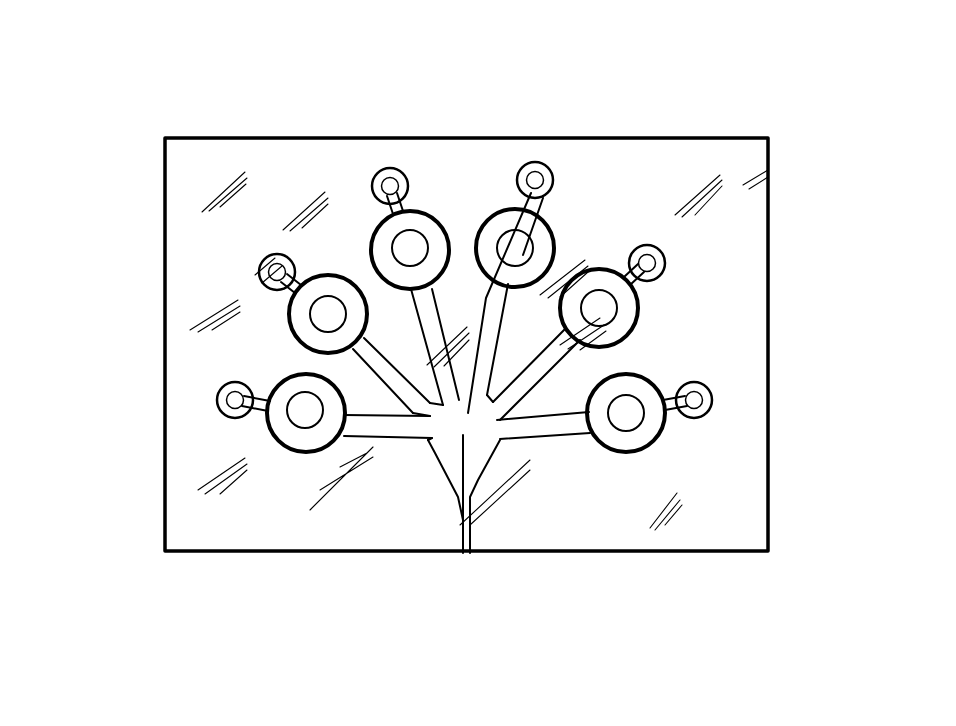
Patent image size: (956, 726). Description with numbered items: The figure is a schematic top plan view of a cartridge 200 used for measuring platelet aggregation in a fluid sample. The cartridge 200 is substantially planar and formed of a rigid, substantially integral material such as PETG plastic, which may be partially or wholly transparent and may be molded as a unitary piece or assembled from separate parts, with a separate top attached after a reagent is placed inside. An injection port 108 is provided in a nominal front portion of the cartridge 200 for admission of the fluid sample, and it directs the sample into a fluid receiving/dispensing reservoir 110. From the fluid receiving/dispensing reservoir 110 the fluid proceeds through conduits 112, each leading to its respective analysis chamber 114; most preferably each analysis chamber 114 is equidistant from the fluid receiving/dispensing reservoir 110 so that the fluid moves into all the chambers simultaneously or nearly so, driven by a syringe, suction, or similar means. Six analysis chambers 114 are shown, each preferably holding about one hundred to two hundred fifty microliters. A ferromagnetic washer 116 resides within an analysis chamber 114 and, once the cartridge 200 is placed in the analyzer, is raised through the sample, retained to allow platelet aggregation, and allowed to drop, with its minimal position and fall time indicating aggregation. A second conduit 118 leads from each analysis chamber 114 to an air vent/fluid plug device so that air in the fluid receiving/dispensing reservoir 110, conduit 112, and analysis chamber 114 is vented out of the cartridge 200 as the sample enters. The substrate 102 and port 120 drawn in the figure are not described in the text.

The cartridge 200 is at (740, 197).
The substrate 102 is at (743, 318).
The injection port 108 is at (472, 535).
The fluid receiving/dispensing reservoir 110 is at (452, 442).
The conduit 112 is at (440, 303).
The analysis chamber 114 is at (280, 385).
The ferromagnetic washer 116 is at (288, 310).
The second conduit 118 is at (627, 268).
The port 120 is at (385, 172).